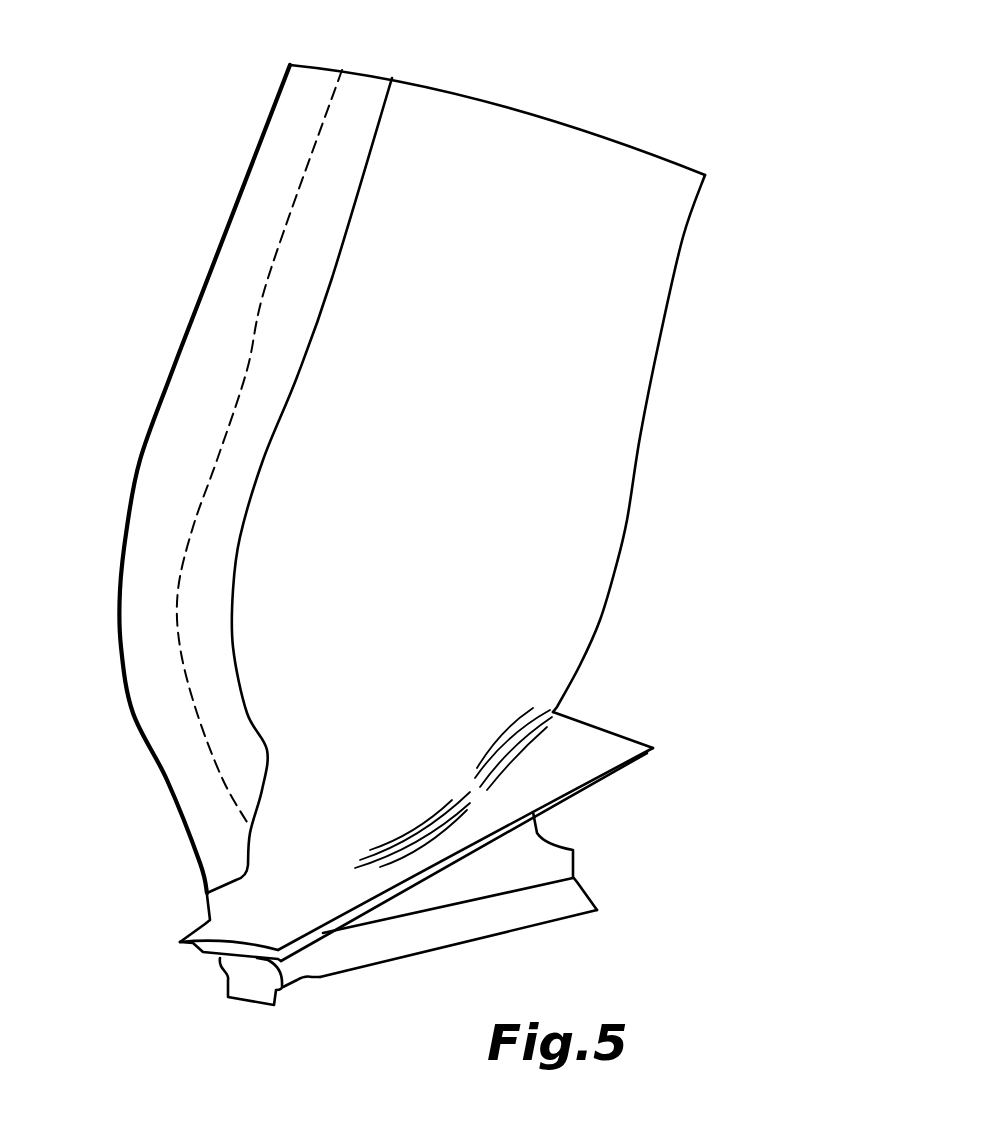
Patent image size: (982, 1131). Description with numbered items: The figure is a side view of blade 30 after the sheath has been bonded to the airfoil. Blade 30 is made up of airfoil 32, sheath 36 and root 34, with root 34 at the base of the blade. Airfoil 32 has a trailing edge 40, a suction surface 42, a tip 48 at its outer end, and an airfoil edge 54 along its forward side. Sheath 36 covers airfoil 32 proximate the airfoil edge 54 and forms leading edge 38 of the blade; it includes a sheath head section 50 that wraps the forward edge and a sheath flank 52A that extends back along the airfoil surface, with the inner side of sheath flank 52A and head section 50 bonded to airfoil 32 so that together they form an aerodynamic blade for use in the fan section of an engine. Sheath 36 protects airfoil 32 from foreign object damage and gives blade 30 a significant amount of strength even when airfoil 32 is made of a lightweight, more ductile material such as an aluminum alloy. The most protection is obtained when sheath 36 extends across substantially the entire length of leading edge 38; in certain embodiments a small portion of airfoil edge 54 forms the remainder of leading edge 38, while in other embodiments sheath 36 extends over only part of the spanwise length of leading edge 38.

The blade 30 is at (425, 508).
The airfoil 32 is at (425, 452).
The root 34 is at (600, 890).
The sheath 36 is at (164, 479).
The leading edge 38 is at (127, 523).
The trailing edge 40 is at (638, 443).
The suction surface 42 is at (535, 550).
The tip 48 is at (455, 87).
The sheath head section 50 is at (250, 255).
The sheath flank 52A is at (363, 97).
The airfoil edge 54 is at (313, 143).